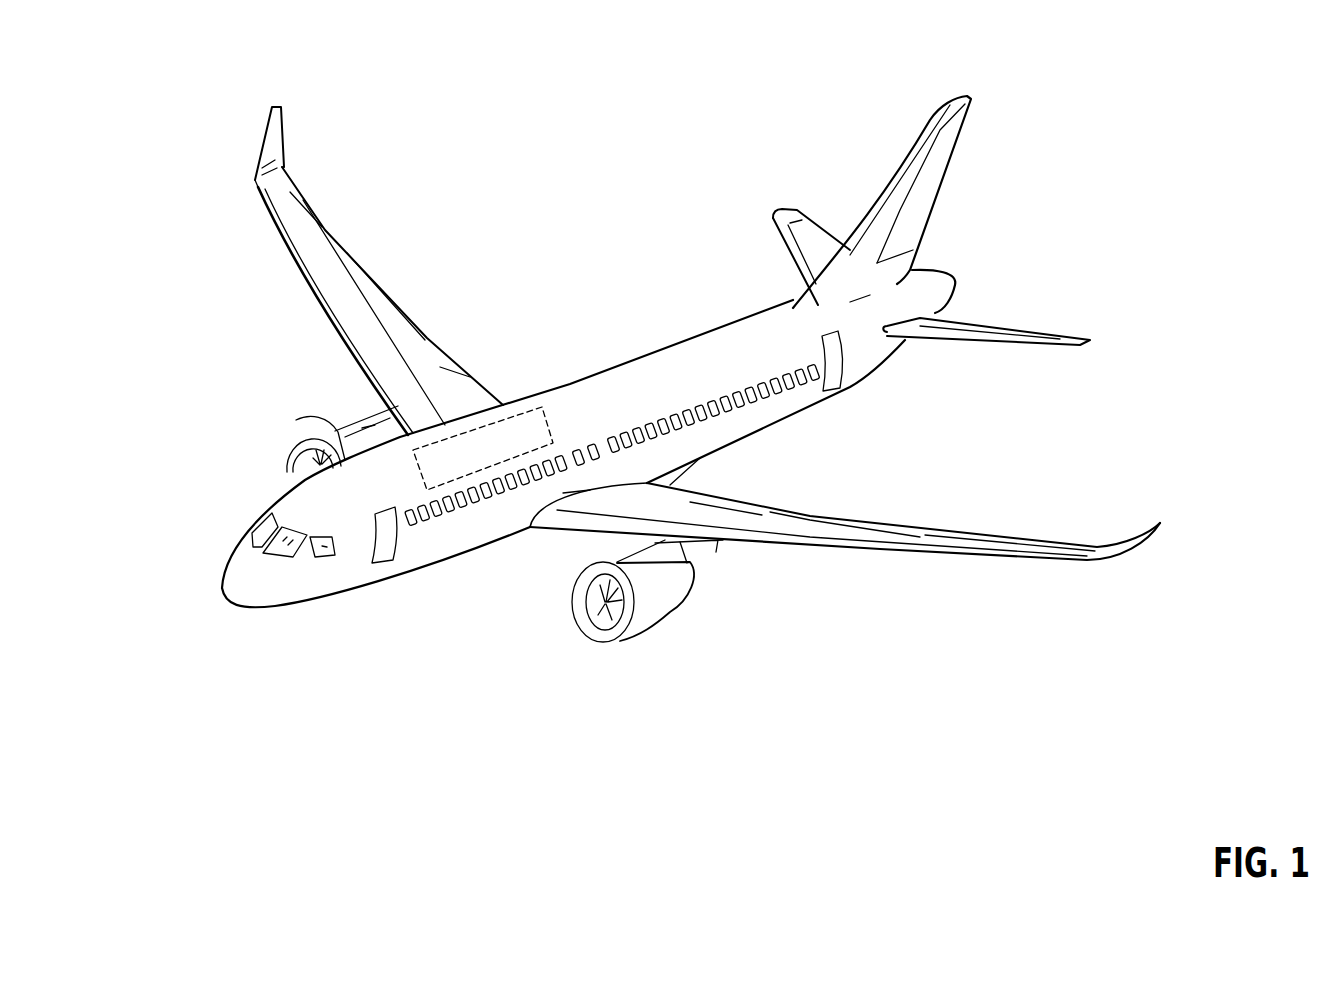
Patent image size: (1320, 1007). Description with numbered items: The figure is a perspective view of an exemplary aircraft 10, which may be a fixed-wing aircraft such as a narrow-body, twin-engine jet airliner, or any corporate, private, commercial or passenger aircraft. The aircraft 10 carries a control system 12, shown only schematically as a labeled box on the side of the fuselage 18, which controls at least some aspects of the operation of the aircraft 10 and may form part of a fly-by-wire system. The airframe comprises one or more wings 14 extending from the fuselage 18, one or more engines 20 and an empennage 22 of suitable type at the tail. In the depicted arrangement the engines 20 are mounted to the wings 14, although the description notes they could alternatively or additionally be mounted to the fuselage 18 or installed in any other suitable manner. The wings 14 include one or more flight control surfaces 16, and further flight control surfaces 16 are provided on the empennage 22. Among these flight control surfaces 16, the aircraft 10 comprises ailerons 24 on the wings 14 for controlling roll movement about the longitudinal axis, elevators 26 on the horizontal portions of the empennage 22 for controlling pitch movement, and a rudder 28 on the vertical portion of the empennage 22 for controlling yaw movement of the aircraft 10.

The aircraft 10 is at (659, 391).
The control system 12 is at (487, 446).
The wings 14 is at (292, 307).
The flight control surfaces 16 is at (345, 318).
The fuselage 18 is at (563, 402).
The engines 20 is at (297, 420).
The empennage 22 is at (859, 220).
The ailerons 24 is at (322, 225).
The elevators 26 is at (859, 271).
The rudder 28 is at (927, 185).